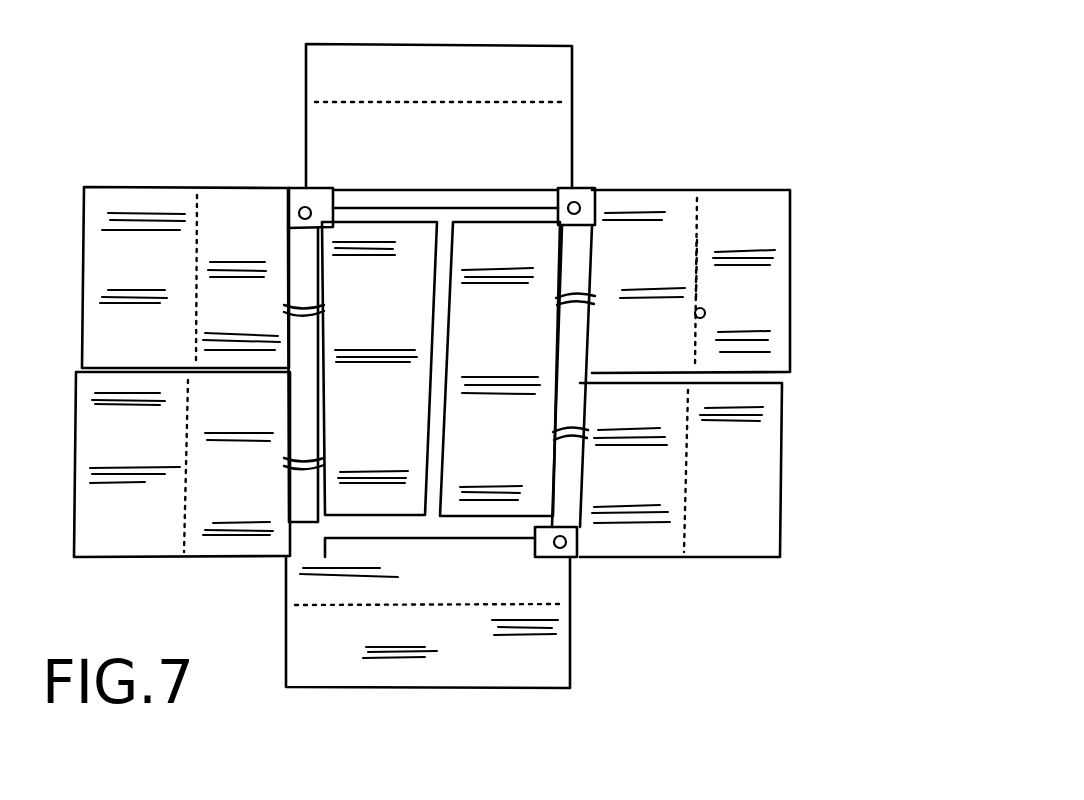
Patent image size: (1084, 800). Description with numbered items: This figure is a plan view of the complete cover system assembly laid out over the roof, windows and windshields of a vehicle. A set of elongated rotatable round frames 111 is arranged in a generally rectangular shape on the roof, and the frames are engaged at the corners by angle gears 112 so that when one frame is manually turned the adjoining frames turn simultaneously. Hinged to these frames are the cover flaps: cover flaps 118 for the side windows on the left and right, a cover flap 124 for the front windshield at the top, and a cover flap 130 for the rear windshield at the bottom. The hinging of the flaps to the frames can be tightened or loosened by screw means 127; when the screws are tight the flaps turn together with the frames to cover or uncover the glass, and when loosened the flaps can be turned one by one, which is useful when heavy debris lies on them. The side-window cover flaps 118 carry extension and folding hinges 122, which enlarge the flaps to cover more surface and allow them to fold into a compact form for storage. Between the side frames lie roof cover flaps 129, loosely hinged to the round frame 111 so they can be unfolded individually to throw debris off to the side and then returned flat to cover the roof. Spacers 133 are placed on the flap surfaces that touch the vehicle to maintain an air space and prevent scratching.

The rotatable round frame 111 is at (480, 197).
The angle gear 112 is at (300, 207).
The cover flap for side window 118 is at (140, 210).
The extension and folding hinge 122 is at (708, 278).
The cover flap for front windshield 124 is at (330, 80).
The screw means 127 is at (580, 243).
The roof cover flap 129 is at (515, 440).
The cover flap for rear windshield 130 is at (535, 662).
The spacer 133 is at (712, 312).